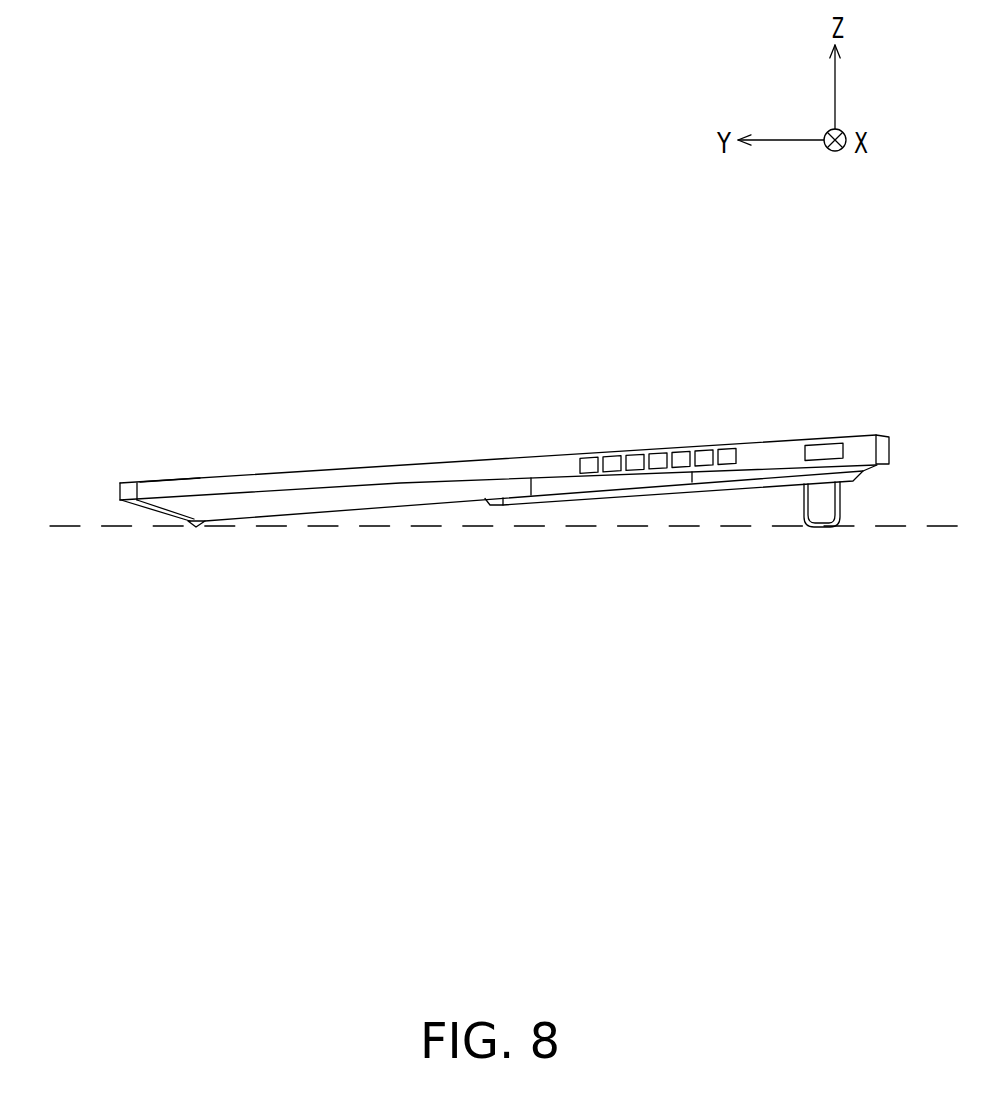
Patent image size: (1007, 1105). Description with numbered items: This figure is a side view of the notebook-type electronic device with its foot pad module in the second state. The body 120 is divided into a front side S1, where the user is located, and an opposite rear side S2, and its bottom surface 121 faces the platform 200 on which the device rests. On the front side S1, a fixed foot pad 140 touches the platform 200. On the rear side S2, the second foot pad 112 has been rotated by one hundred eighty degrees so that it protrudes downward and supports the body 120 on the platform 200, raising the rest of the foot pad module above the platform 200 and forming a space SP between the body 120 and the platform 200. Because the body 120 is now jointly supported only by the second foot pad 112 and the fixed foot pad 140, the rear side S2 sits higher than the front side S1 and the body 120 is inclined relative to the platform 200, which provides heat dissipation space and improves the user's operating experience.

The body 120 is at (505, 457).
The bottom surface 121 is at (672, 499).
The second foot pad 112 is at (823, 512).
The fixed foot pad 140 is at (207, 528).
The platform 200 is at (62, 524).
The front side S1 is at (155, 466).
The rear side S2 is at (900, 435).
The space SP is at (766, 512).